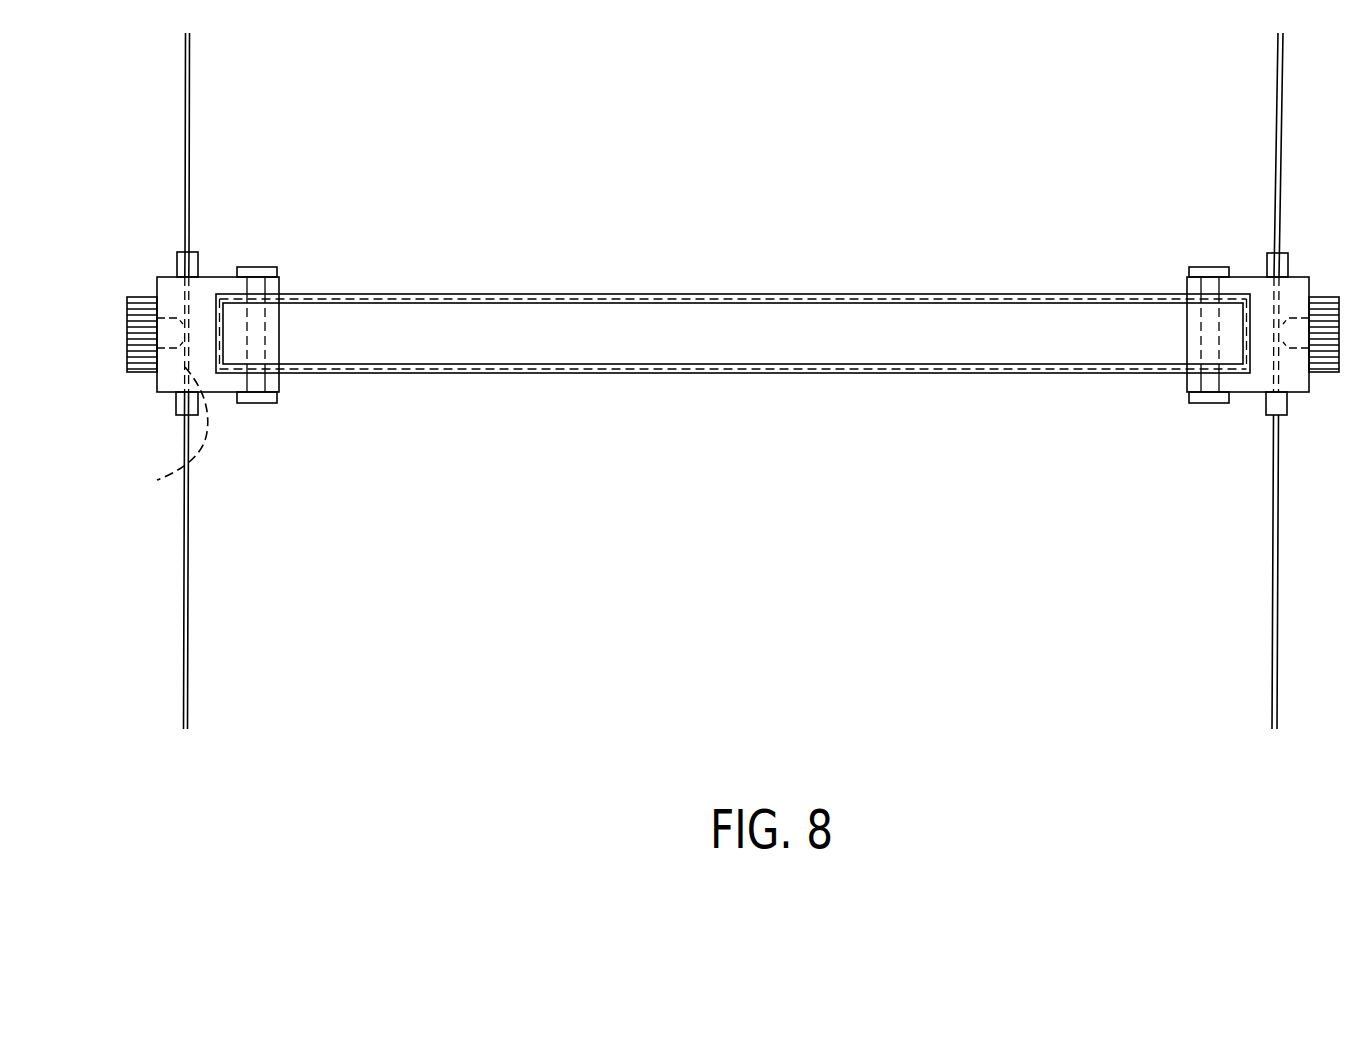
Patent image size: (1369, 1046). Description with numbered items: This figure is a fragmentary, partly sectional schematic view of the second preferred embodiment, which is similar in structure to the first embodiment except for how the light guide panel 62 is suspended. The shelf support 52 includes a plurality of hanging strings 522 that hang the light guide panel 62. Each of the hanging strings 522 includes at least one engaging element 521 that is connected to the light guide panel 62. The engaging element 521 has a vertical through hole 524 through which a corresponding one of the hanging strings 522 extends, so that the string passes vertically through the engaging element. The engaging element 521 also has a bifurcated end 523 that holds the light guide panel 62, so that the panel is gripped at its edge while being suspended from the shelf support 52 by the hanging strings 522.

The shelf support 52 is at (152, 280).
The engaging element 521 is at (222, 282).
The hanging string 522 is at (190, 138).
The bifurcated end 523 is at (268, 300).
The vertical through hole 524 is at (155, 435).
The light guide panel 62 is at (929, 373).